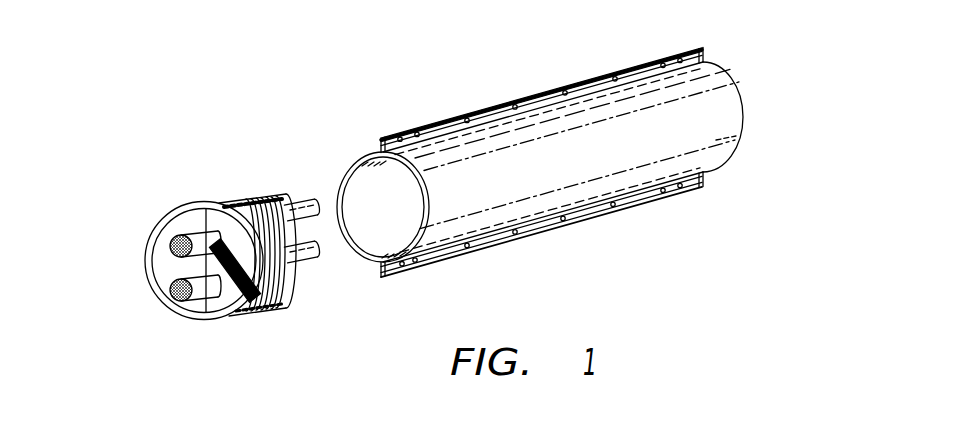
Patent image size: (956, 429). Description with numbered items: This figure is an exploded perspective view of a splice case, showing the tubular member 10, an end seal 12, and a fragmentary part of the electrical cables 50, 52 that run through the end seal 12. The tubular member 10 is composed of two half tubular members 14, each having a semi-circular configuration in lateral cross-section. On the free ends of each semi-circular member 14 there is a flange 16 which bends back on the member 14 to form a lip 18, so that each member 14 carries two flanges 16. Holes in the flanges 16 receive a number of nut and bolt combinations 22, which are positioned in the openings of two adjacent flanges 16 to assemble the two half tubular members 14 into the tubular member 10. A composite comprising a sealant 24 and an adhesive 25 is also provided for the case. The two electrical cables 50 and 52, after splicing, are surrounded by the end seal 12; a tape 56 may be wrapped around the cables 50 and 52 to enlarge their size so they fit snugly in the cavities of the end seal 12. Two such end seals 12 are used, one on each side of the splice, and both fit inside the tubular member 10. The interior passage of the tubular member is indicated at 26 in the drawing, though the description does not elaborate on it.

The tubular member 10 is at (436, 188).
The end seal 12 is at (196, 254).
The half tubular member 14 is at (727, 106).
The flange 16 is at (692, 174).
The lip 18 is at (380, 141).
The nut and bolt combination 22 is at (467, 117).
The sealant 24 is at (163, 213).
The adhesive 25 is at (293, 201).
The interior passage 26 is at (393, 228).
The electrical cable 50 is at (200, 238).
The electrical cable 52 is at (212, 292).
The tape 56 is at (212, 236).